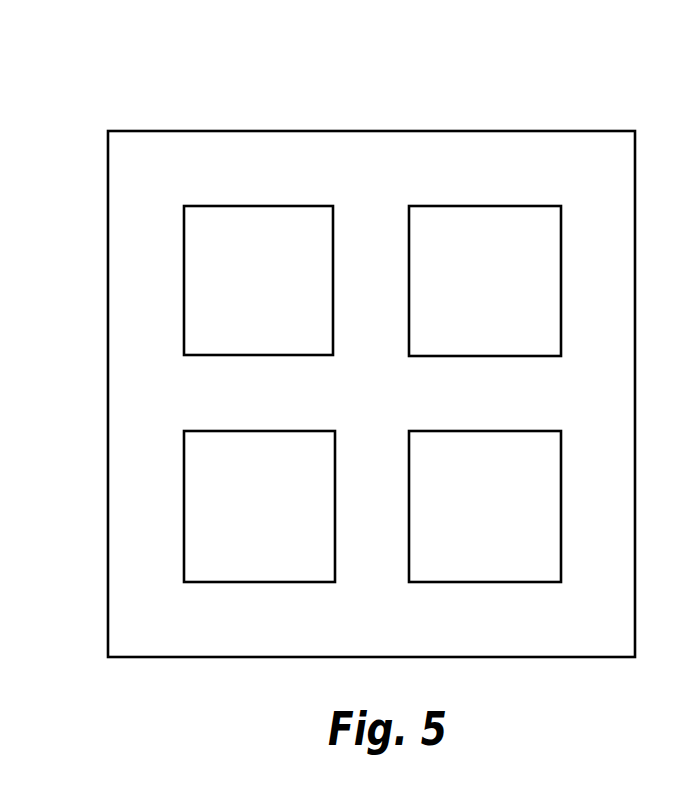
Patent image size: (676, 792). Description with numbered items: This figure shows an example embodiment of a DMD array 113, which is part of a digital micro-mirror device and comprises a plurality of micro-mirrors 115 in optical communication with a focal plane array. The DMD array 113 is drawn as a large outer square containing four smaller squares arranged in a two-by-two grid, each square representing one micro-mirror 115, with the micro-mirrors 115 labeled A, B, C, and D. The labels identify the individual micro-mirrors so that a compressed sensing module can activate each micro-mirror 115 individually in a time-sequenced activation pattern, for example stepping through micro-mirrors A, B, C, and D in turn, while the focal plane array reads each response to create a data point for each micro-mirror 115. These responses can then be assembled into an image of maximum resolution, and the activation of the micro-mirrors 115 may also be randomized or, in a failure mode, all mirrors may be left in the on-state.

The DMD array 113 is at (91, 112).
The micro-mirrors 115 is at (281, 430).
The micro-mirror A is at (258, 280).
The micro-mirror B is at (485, 281).
The micro-mirror C is at (259, 506).
The micro-mirror D is at (485, 506).